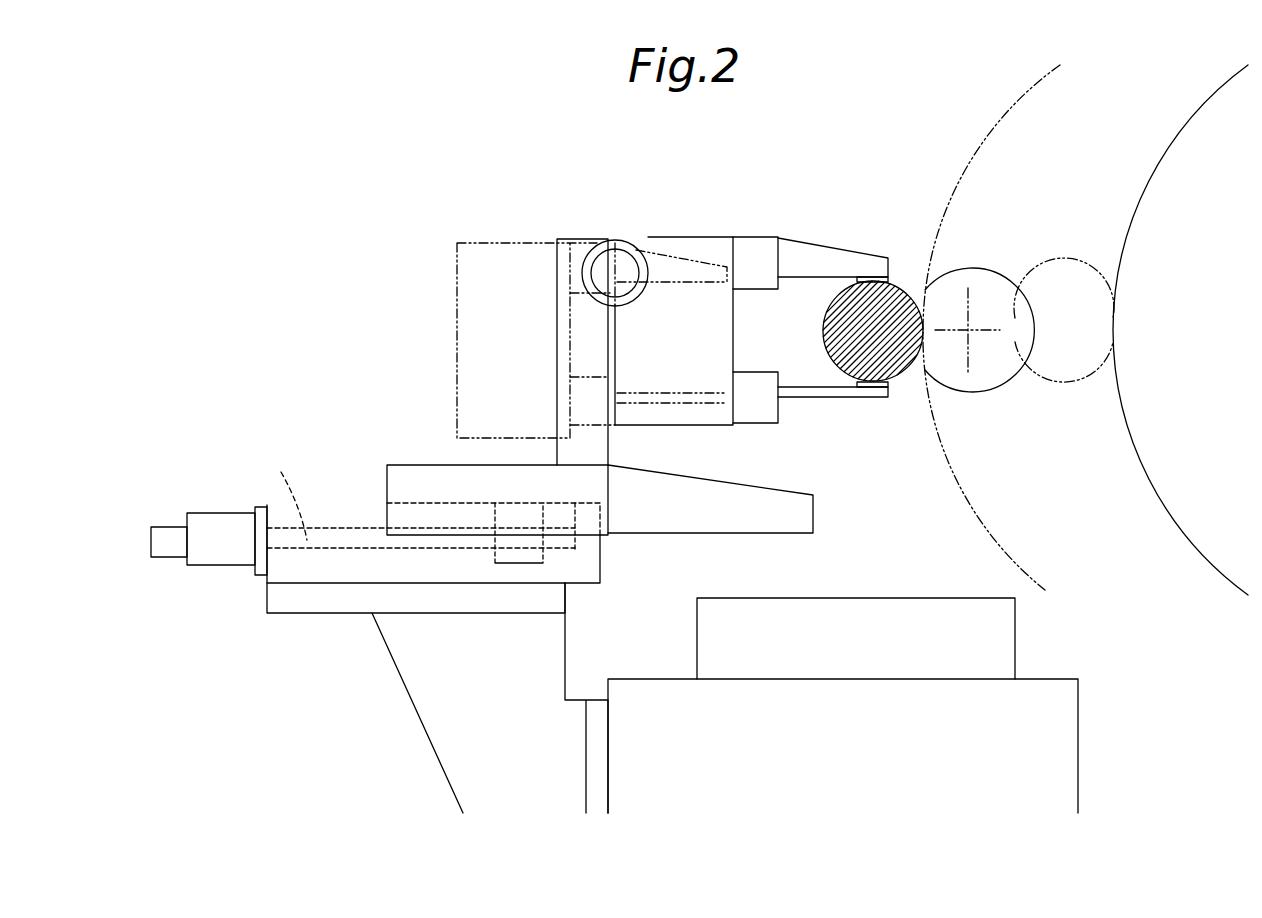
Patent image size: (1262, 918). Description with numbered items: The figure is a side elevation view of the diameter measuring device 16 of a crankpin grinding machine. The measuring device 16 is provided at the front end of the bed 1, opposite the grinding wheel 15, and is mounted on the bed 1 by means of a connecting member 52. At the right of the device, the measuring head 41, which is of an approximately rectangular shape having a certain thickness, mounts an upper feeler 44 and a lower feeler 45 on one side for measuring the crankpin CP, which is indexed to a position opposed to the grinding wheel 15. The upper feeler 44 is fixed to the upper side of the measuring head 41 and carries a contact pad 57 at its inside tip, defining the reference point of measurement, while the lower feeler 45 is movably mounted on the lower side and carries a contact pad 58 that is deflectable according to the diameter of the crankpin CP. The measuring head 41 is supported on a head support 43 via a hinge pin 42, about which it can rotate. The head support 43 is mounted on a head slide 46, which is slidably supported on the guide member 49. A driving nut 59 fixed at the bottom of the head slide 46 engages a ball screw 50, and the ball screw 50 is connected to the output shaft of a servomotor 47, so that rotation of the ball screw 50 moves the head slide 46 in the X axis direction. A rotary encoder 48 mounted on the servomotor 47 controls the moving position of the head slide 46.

The bed 1 is at (1060, 760).
The grinding wheel 15 is at (1200, 145).
The measuring device 16 is at (422, 365).
The measuring head 41 is at (718, 250).
The hinge pin 42 is at (605, 270).
The head support 43 is at (560, 320).
The upper feeler 44 is at (805, 262).
The lower feeler 45 is at (810, 398).
The head slide 46 is at (432, 480).
The servomotor 47 is at (212, 525).
The rotary encoder 48 is at (168, 535).
The guide member 49 is at (338, 515).
The ball screw 50 is at (276, 494).
The connecting member 52 is at (425, 683).
The contact pad 57 is at (868, 272).
The contact pad 58 is at (873, 392).
The driving nut 59 is at (538, 553).
The crankpin CP is at (903, 278).